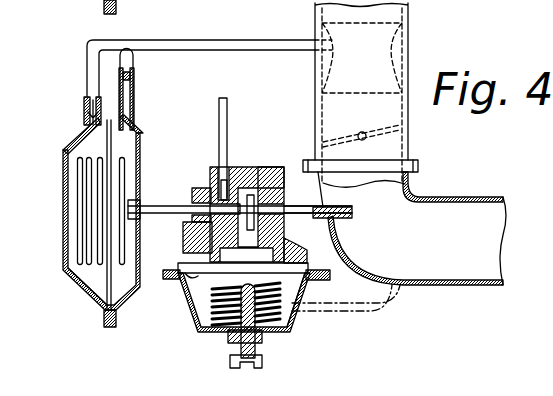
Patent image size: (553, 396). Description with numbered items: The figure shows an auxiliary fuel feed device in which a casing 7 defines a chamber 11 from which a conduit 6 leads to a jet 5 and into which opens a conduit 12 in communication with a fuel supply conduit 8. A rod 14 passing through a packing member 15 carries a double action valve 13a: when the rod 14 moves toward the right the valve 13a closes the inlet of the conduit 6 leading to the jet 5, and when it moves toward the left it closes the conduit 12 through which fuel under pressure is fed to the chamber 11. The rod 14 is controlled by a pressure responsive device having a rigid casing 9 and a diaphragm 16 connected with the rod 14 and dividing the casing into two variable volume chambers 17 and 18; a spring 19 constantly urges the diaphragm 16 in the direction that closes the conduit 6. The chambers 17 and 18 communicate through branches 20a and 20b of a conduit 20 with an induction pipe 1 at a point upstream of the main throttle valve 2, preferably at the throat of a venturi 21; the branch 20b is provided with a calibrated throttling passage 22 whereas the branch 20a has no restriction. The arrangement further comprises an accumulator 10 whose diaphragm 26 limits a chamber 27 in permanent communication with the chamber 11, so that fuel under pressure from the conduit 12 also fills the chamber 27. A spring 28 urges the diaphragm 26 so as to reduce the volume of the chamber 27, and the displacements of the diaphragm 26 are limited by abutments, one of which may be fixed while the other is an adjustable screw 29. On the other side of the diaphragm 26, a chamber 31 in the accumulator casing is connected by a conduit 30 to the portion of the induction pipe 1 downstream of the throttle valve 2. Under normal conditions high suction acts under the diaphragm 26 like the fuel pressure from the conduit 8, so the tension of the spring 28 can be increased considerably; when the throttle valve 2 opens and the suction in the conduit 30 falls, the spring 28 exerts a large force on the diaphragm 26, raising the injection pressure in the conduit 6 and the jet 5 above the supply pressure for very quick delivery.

The induction pipe 1 is at (477, 205).
The main throttle valve 2 is at (361, 140).
The jet 5 is at (352, 211).
The conduit 6 is at (292, 213).
The casing 7 is at (248, 170).
The conduit 8 is at (219, 125).
The rigid casing 9 is at (65, 260).
The accumulator 10 is at (192, 320).
The chamber 11 is at (228, 182).
The conduit 12 is at (190, 248).
The double action valve 13a is at (273, 168).
The rod 14 is at (162, 213).
The packing member 15 is at (203, 190).
The diaphragm 16 is at (141, 133).
The chamber 17 is at (100, 279).
The chamber 18 is at (118, 296).
The spring 19 is at (93, 207).
The conduit 20 is at (228, 43).
The branch 20a is at (88, 80).
The branch 20b is at (134, 92).
The venturi 21 is at (393, 50).
The calibrated throttling passage 22 is at (133, 80).
The diaphragm 26 is at (182, 287).
The chamber 27 is at (306, 266).
The spring 28 is at (228, 340).
The screw 29 is at (262, 353).
The conduit 30 is at (366, 310).
The chamber 31 is at (292, 305).